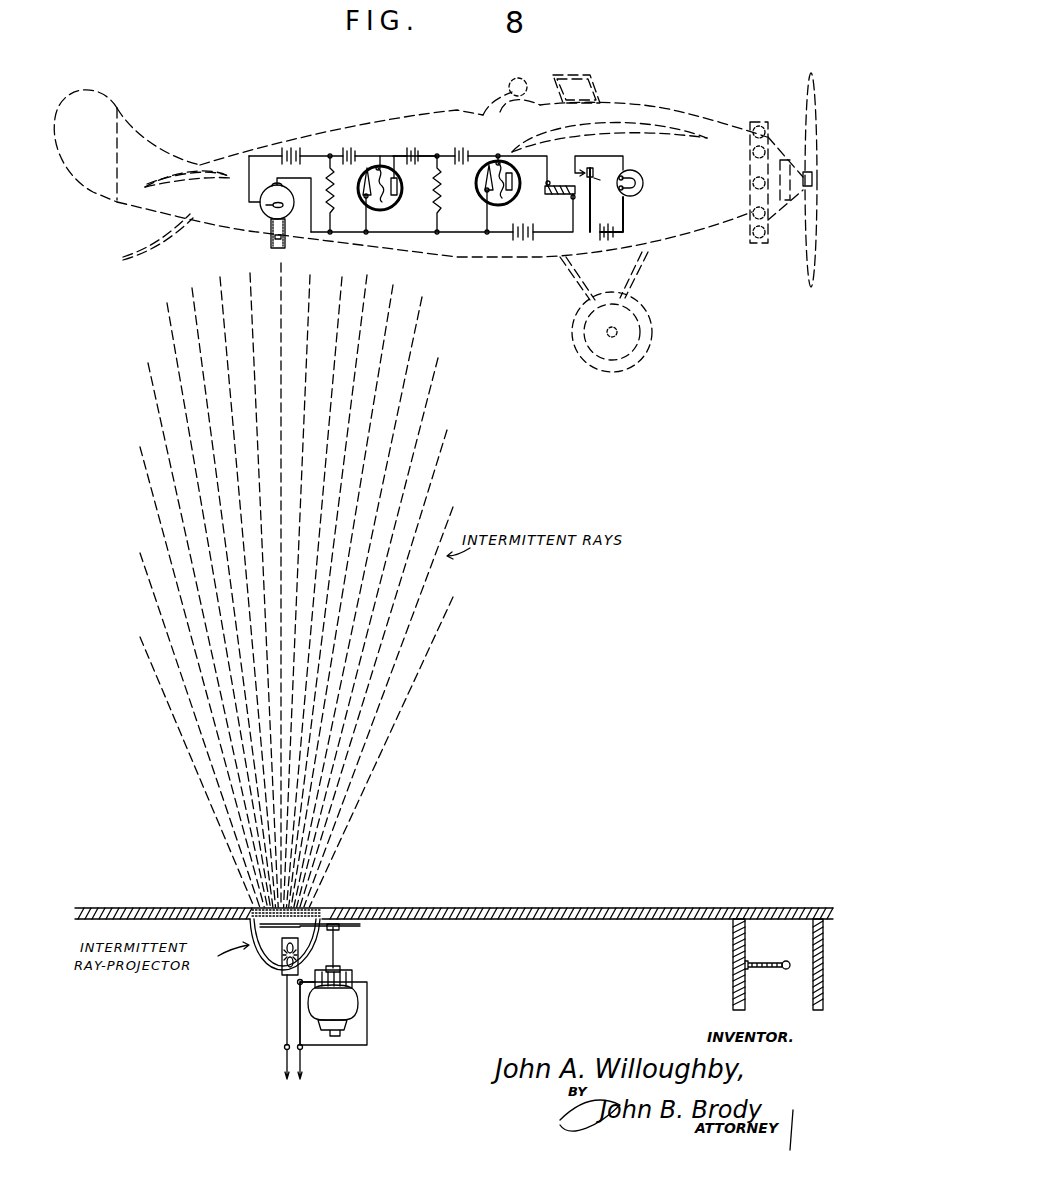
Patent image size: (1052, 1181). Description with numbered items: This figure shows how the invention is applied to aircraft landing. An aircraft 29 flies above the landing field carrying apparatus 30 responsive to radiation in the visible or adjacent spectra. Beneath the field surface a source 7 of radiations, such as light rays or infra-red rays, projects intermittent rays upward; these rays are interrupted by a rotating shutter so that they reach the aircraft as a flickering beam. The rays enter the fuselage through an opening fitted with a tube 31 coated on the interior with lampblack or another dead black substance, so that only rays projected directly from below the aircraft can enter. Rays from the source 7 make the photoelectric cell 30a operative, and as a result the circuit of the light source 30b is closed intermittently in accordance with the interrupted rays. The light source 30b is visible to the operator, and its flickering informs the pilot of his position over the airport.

The aircraft 29 is at (522, 260).
The apparatus responsive to radiation 30 is at (441, 197).
The photoelectric cell 30a is at (273, 185).
The light source 30b is at (644, 174).
The tube 31 is at (280, 232).
The source of radiations 7 is at (303, 932).